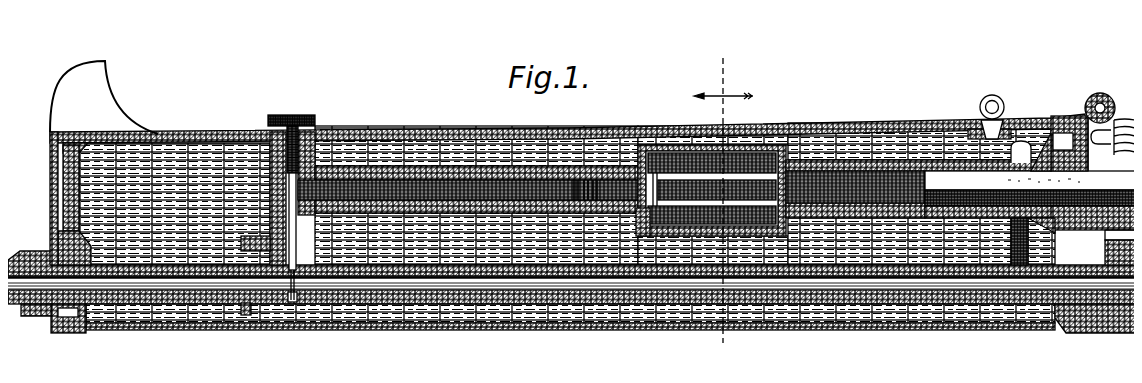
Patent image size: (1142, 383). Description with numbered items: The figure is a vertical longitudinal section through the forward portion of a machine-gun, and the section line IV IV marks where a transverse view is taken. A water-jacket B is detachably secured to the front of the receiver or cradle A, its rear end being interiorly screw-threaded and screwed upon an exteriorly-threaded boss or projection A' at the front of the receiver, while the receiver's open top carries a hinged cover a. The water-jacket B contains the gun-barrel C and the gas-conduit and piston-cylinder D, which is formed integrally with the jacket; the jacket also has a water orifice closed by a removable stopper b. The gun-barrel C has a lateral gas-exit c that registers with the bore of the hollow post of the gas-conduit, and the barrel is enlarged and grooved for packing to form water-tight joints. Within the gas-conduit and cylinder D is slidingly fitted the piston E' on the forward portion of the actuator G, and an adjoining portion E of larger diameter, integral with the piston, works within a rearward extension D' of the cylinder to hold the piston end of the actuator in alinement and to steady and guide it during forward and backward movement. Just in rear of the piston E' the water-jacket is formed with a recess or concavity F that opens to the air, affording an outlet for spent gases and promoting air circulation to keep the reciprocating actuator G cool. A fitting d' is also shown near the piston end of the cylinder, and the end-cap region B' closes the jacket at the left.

The water-jacket B is at (571, 187).
The casing end cap B' is at (84, 163).
The hinged cover a is at (268, 148).
The gas-conduit and piston-cylinder D is at (476, 155).
The piston E' is at (482, 148).
The adjoining portion of the actuator E is at (744, 165).
The recess or concavity F is at (753, 120).
The collar d' is at (618, 228).
The rearward extension of the cylinder D' is at (918, 205).
The actuator G is at (937, 173).
The removable stopper b is at (990, 118).
The knob u is at (1088, 90).
The gun-barrel C is at (493, 280).
The lateral gas-exit c is at (287, 294).
The receiver or cradle A is at (1029, 287).
The exteriorly-threaded boss or projection A' is at (1069, 334).
The section line IV IV is at (723, 206).